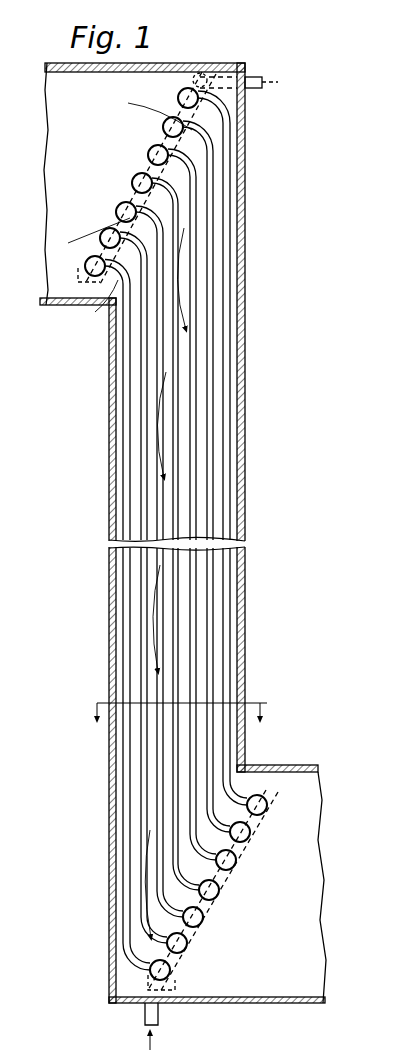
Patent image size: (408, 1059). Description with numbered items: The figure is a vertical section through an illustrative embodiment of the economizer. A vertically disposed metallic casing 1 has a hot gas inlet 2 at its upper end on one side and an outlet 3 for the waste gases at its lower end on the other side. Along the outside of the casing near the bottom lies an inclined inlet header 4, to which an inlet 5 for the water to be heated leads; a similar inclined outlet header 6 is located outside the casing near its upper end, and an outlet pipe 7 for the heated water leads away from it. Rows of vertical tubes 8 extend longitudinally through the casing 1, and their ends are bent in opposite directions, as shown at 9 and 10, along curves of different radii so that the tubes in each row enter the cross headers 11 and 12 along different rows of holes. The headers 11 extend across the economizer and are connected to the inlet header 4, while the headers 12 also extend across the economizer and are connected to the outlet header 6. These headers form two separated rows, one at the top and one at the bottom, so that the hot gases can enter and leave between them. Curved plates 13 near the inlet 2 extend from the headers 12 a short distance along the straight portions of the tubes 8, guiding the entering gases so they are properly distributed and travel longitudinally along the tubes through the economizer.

The casing 1 is at (245, 410).
The hot gas inlet 2 is at (142, 184).
The outlet 3 is at (217, 884).
The inlet header 4 is at (236, 871).
The inlet 5 is at (168, 1022).
The outlet header 6 is at (164, 142).
The outlet pipe 7 is at (252, 92).
The vertical tubes 8 is at (226, 487).
The bent tube end 9 is at (104, 231).
The bent tube end 10 is at (88, 260).
The cross headers 11 is at (252, 830).
The cross headers 12 is at (150, 163).
The curved plates 13 is at (108, 300).